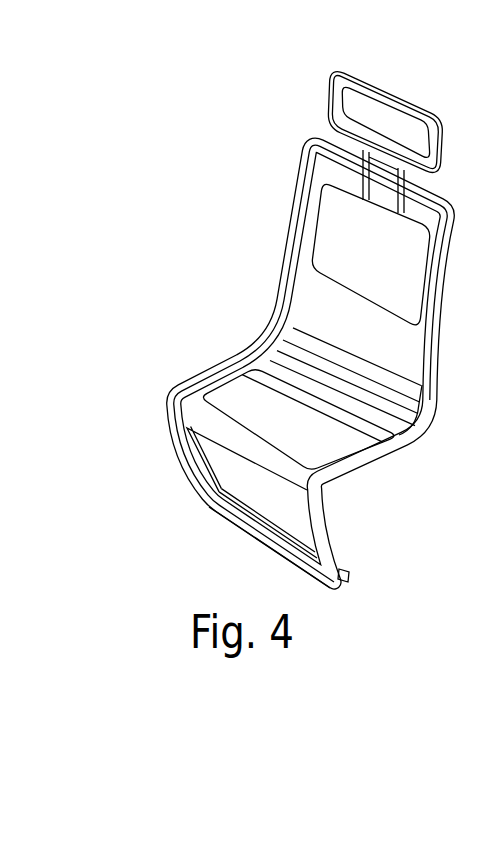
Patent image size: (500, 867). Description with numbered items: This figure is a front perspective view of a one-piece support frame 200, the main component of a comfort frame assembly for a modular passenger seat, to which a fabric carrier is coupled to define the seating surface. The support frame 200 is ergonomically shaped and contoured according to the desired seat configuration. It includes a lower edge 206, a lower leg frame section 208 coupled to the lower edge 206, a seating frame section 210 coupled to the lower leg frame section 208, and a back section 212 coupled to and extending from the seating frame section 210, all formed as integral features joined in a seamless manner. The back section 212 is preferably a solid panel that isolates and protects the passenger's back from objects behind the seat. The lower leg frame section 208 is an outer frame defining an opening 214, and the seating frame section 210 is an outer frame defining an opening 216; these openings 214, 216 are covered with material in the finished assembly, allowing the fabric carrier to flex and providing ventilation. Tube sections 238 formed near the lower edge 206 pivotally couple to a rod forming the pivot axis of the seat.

The support frame 200 is at (299, 182).
The lower edge 206 is at (283, 560).
The lower leg frame section 208 is at (168, 533).
The seating frame section 210 is at (216, 310).
The back section 212 is at (307, 285).
The opening 214 is at (217, 457).
The opening 216 is at (243, 407).
The tube sections 238 is at (348, 580).